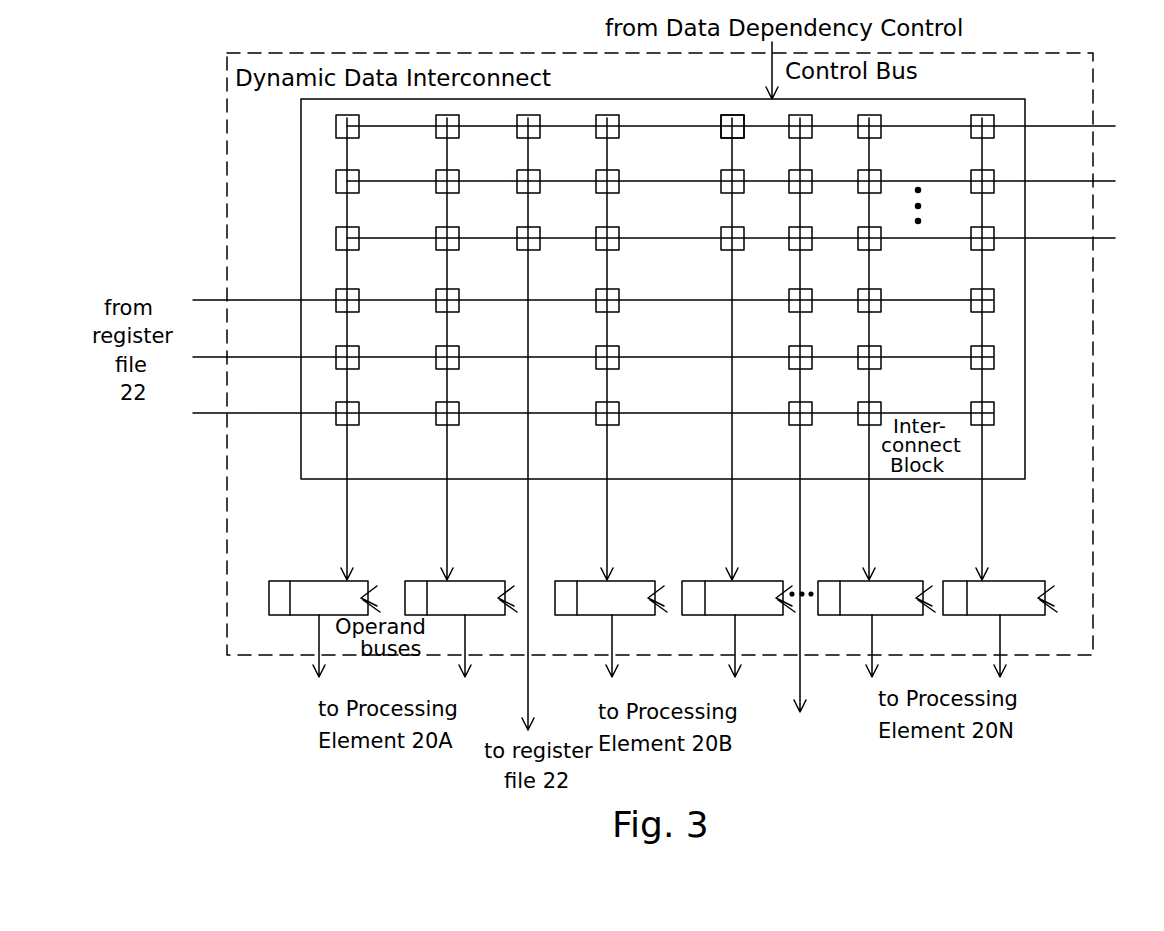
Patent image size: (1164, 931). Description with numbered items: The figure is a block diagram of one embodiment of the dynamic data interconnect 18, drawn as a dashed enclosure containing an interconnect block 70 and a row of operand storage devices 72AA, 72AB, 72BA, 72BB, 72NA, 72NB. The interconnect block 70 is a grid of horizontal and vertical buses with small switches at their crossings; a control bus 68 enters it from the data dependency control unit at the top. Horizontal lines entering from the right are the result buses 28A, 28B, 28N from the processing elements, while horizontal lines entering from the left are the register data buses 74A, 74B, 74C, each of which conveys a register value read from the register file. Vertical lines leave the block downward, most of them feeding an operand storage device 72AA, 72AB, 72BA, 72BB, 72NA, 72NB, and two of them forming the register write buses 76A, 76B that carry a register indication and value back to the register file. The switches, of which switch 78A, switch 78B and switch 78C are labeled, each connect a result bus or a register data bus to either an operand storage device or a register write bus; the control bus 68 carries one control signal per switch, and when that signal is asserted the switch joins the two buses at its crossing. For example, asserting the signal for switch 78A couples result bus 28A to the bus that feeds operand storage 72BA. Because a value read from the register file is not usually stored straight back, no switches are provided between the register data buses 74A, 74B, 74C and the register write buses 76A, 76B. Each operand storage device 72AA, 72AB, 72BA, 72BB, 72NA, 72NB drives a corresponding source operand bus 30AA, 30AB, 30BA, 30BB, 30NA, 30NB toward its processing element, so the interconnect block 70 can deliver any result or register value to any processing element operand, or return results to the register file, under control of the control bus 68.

The dynamic data interconnect 18 is at (1093, 450).
The interconnect block 70 is at (684, 455).
The control bus 68 is at (771, 52).
The result bus 28A is at (1082, 124).
The result bus 28B is at (1082, 179).
The result bus 28N is at (1082, 236).
The register data bus 74A is at (232, 302).
The register data bus 74B is at (232, 359).
The register data bus 74C is at (232, 415).
The register write bus 76A is at (528, 658).
The register write bus 76B is at (800, 660).
The switch 78A is at (618, 134).
The switch 78B is at (717, 125).
The switch 78C is at (618, 250).
The operand storage device 72AA is at (342, 580).
The operand storage device 72AB is at (450, 578).
The operand storage device 72BA is at (607, 578).
The operand storage device 72BB is at (725, 578).
The operand storage device 72NA is at (858, 578).
The operand storage device 72NB is at (983, 578).
The source operand bus 30AA is at (318, 666).
The source operand bus 30AB is at (460, 667).
The source operand bus 30BA is at (605, 664).
The source operand bus 30BB is at (732, 666).
The source operand bus 30NA is at (870, 665).
The source operand bus 30NB is at (1003, 660).